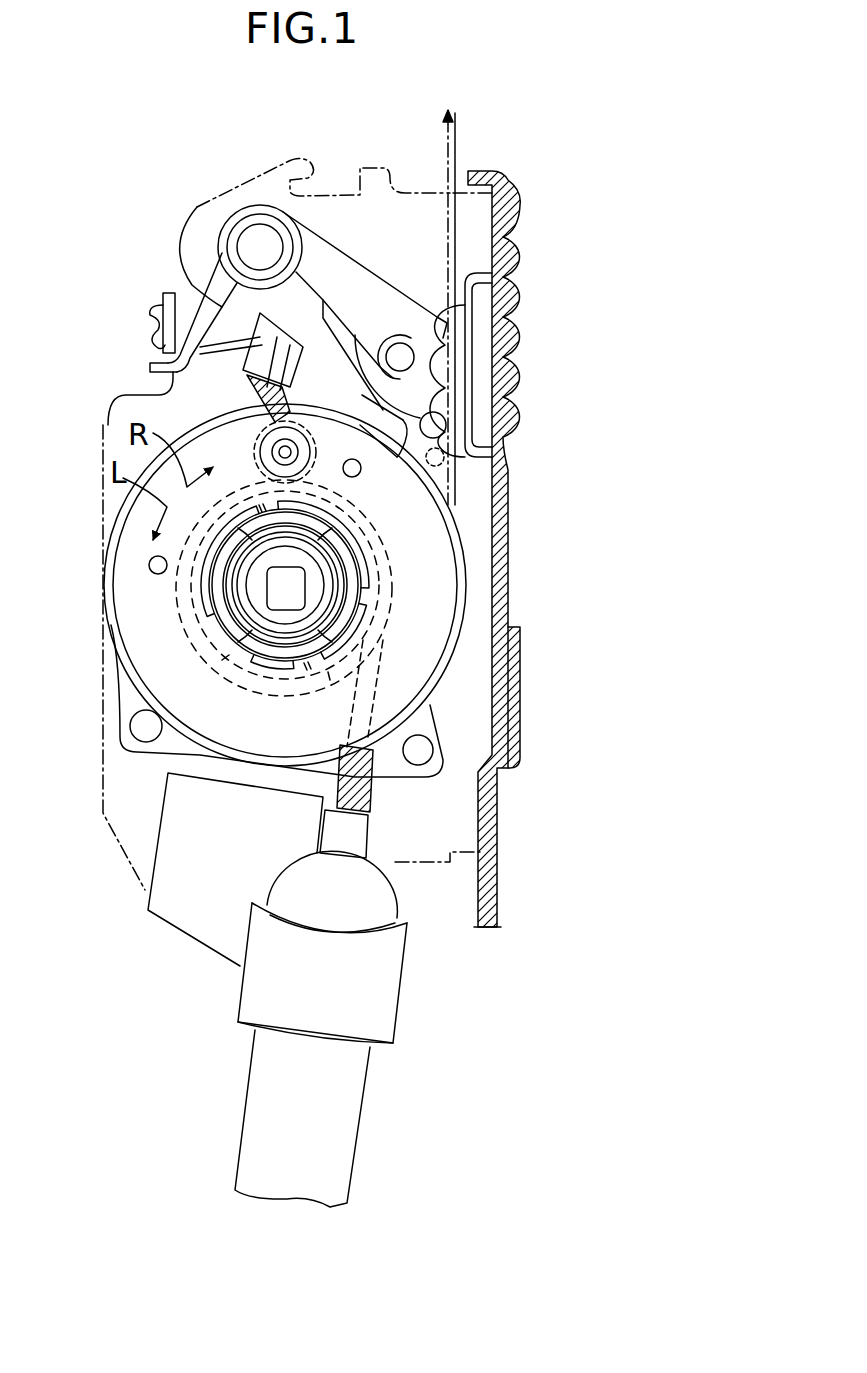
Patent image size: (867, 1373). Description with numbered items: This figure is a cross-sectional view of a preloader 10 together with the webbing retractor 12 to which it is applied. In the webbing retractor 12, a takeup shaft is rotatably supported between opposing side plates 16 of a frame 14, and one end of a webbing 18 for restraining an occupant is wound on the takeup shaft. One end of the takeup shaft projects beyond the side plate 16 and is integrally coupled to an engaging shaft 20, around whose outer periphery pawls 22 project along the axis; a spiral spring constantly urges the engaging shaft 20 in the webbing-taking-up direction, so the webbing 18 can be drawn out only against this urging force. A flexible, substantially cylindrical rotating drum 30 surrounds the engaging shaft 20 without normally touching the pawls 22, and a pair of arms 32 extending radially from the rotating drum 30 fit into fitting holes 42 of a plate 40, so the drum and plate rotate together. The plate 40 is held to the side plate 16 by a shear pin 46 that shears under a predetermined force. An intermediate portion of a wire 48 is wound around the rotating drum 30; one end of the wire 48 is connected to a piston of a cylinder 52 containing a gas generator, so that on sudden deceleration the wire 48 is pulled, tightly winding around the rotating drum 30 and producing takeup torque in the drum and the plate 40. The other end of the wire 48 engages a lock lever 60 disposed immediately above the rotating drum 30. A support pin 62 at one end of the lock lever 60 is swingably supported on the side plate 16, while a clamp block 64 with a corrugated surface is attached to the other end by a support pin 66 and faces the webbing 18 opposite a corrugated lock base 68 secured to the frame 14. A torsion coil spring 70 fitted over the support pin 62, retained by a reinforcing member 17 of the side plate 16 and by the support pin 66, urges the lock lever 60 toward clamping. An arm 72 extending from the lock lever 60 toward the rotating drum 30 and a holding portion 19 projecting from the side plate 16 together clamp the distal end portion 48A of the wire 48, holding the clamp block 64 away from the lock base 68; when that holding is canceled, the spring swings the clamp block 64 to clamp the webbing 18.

The preloader 10 is at (98, 678).
The webbing retractor 12 is at (344, 156).
The frame 14 is at (508, 497).
The side plate 16 is at (102, 422).
The reinforcing member 17 is at (157, 343).
The webbing 18 is at (458, 149).
The holding portion 19 is at (347, 303).
The engaging shaft 20 is at (343, 603).
The pawls 22 is at (213, 668).
The rotating drum 30 is at (268, 680).
The arms 32 is at (175, 622).
The plate 40 is at (135, 540).
The fitting holes 42 is at (175, 595).
The shear pin 46 is at (262, 420).
The wire 48 is at (365, 800).
The distal end portion 48A is at (163, 300).
The cylinder 52 is at (400, 972).
The lock lever 60 is at (350, 298).
The support pin 62 is at (262, 232).
The clamp block 64 is at (453, 380).
The support pin 66 is at (422, 350).
The lock base 68 is at (477, 310).
The torsion coil spring 70 is at (197, 208).
The arm 72 is at (222, 307).